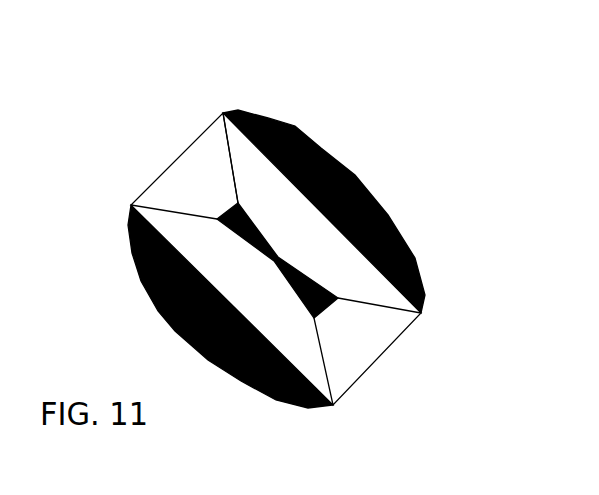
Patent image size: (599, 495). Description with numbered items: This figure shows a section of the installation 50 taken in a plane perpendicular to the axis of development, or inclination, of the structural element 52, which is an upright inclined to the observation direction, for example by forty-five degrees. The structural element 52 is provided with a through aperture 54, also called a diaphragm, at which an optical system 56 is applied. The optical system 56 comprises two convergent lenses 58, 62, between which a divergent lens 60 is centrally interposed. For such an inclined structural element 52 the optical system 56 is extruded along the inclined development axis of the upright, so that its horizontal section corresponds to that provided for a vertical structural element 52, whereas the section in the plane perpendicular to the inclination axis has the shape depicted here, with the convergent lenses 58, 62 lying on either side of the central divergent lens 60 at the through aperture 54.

The installation 50 is at (309, 80).
The structural element 52 is at (170, 181).
The through aperture 54 is at (218, 196).
The optical system 56 is at (257, 95).
The convergent lens 58 is at (141, 287).
The divergent lens 60 is at (266, 252).
The convergent lens 62 is at (347, 155).